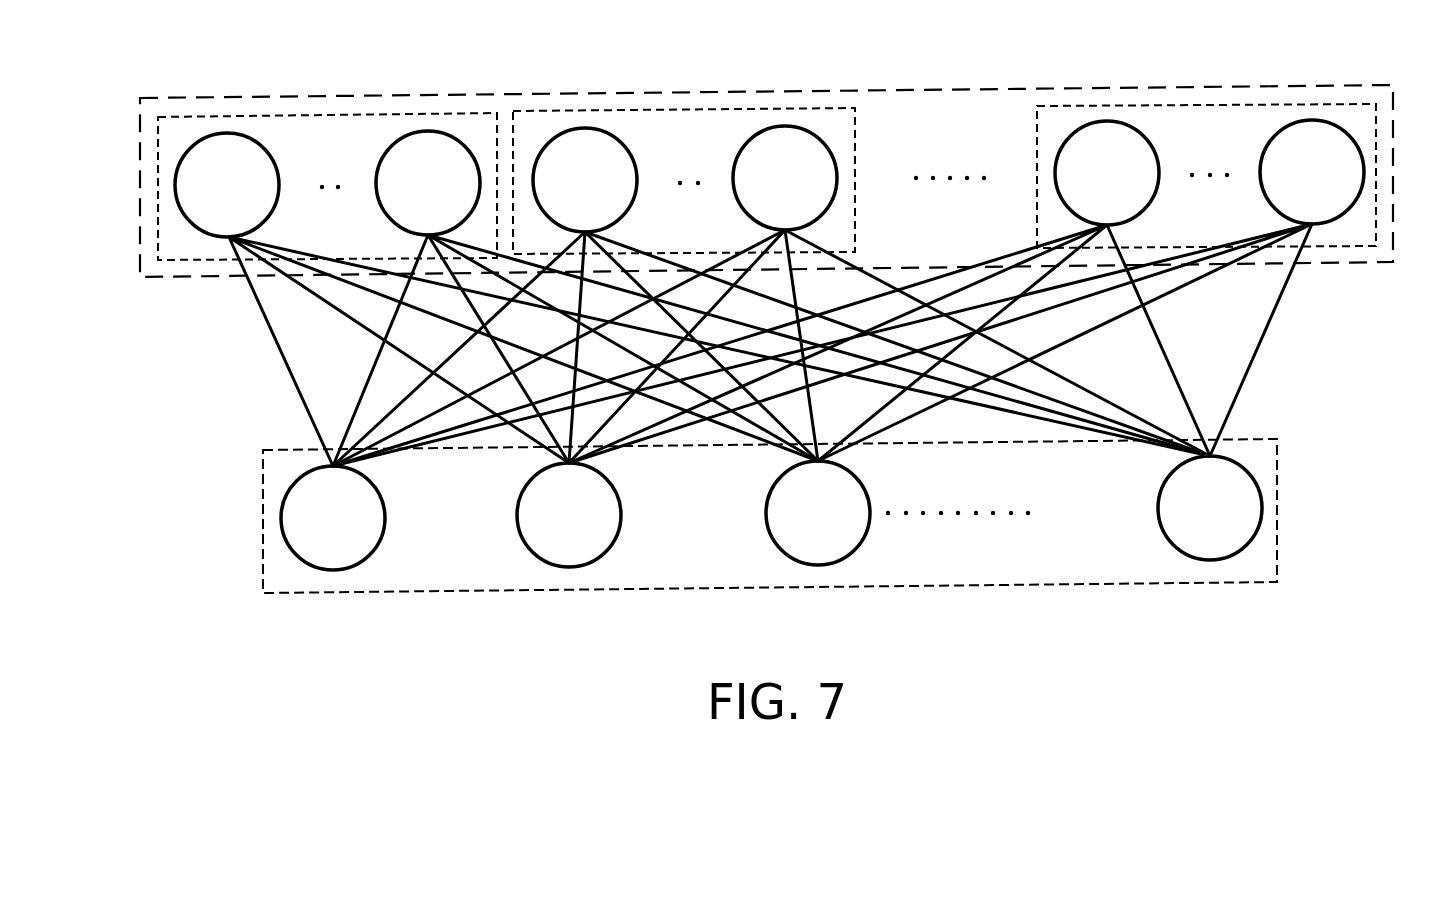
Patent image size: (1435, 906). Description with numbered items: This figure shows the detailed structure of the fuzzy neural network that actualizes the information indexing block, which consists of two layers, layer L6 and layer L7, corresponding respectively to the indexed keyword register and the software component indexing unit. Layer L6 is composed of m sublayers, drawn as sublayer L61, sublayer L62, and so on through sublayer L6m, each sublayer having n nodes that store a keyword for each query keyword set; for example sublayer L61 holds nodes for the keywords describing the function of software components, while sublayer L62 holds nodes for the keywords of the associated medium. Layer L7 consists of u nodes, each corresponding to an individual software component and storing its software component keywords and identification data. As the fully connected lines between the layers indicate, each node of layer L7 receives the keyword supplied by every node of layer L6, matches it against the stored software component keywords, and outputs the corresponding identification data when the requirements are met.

The layer L6 is at (1368, 85).
The sublayer L61 is at (203, 117).
The sublayer L62 is at (548, 110).
The sublayer L6m is at (1070, 106).
The layer L7 is at (1255, 440).